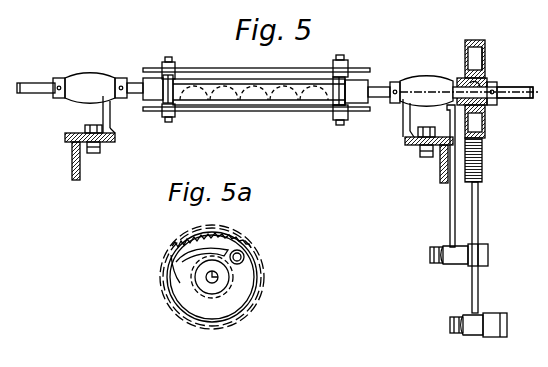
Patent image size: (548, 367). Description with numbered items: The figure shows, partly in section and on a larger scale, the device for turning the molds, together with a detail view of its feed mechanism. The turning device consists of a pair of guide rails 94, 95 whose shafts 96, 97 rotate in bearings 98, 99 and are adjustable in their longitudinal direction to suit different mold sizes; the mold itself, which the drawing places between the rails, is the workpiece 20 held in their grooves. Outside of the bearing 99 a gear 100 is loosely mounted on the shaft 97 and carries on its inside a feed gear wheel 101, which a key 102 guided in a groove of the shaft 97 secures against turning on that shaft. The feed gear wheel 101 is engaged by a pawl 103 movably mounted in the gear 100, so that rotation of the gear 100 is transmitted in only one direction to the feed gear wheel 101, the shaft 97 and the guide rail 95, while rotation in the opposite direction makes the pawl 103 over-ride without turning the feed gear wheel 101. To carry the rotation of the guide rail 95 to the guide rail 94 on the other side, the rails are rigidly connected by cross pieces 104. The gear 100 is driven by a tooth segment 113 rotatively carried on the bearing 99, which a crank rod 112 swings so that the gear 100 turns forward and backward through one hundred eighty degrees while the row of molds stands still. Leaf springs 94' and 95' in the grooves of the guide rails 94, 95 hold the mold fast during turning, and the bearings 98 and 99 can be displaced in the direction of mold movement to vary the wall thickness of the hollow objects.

In FIG. 5, the tube 20 is at (236, 102).
In FIG. 5, the guide rail 94 is at (157, 120).
In FIG. 5, the leaf spring 94' is at (191, 62).
In FIG. 5, the guide rail 95 is at (352, 120).
In FIG. 5, the leaf spring 95' is at (331, 62).
In FIG. 5, the shaft 96 is at (40, 83).
In FIG. 5, the shaft 97 is at (524, 98).
In FIG. 5A, the shaft 97 is at (218, 283).
In FIG. 5, the bearing 98 is at (92, 69).
In FIG. 5, the bearing 99 is at (418, 80).
In FIG. 5, the gear 100 is at (466, 56).
In FIG. 5A, the gear 100 is at (190, 234).
In FIG. 5, the feed gear wheel 101 is at (476, 84).
In FIG. 5A, the feed gear wheel 101 is at (224, 277).
In FIG. 5, the key 102 is at (492, 88).
In FIG. 5A, the key 102 is at (205, 270).
In FIG. 5, the pawl 103 is at (484, 56).
In FIG. 5A, the pawl 103 is at (240, 252).
In FIG. 5, the cross pieces 104 is at (256, 93).
In FIG. 5, the crank rod 112 is at (496, 315).
In FIG. 5, the tooth segment 113 is at (481, 167).